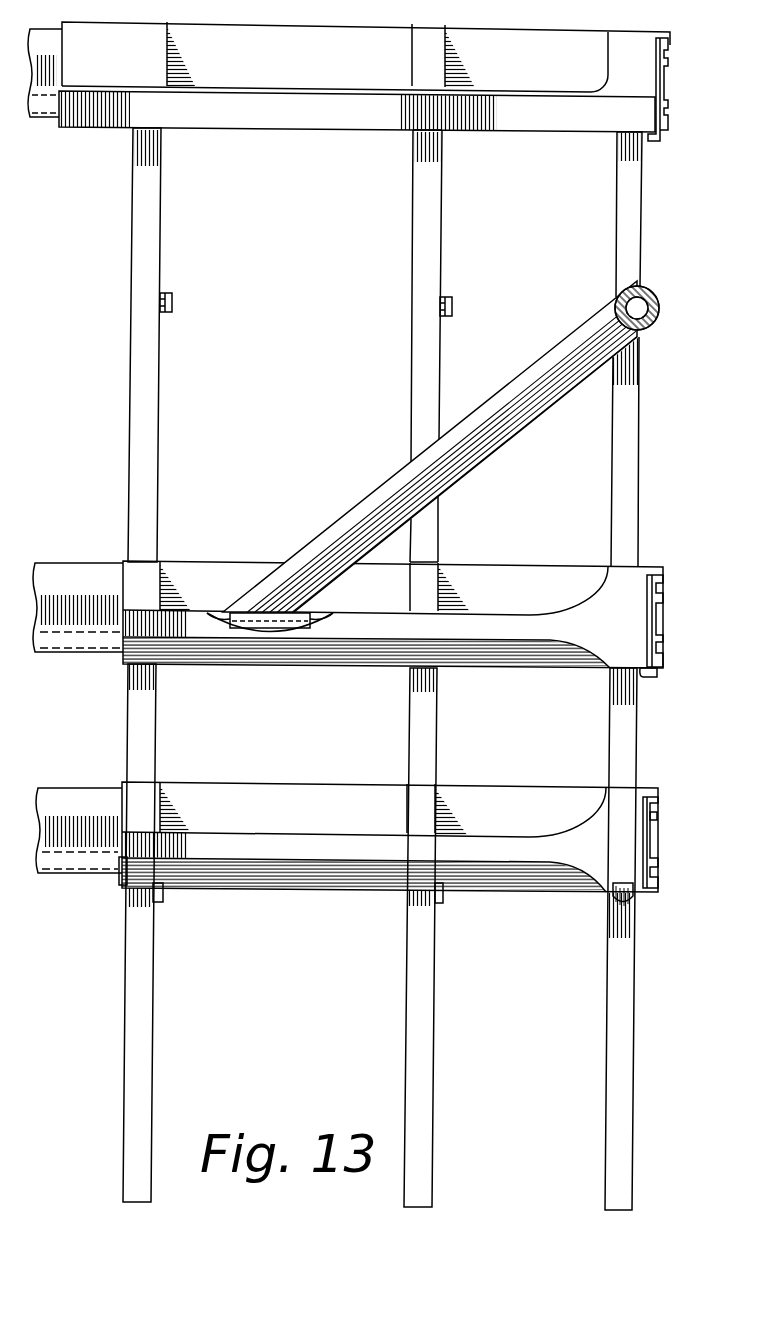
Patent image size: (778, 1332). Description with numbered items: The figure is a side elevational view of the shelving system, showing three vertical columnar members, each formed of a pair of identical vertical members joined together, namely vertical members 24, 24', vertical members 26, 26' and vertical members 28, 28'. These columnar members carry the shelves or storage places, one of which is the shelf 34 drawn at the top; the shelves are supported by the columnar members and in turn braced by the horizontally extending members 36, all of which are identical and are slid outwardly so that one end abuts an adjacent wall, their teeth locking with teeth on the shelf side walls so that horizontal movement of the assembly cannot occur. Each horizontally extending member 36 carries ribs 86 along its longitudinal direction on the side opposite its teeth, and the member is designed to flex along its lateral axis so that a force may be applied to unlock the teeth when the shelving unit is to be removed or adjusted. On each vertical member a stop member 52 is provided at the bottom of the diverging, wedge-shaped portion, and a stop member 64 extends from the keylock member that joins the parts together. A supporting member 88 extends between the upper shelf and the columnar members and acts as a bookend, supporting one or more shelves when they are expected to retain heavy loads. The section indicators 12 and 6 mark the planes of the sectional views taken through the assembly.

The shelf 34 is at (600, 28).
The horizontally extending member 36 is at (660, 87).
The vertical member 26' is at (462, 346).
The stop member 52 is at (173, 302).
The vertical member 24' is at (175, 345).
The supporting member 88 is at (518, 376).
The vertical member 28' is at (650, 349).
The section line 12 is at (250, 687).
The stop member 64 is at (657, 673).
The section line 6 is at (629, 963).
The ribs 86 is at (660, 813).
The vertical member 24 is at (168, 933).
The vertical member 26 is at (442, 937).
The vertical member 28 is at (646, 939).